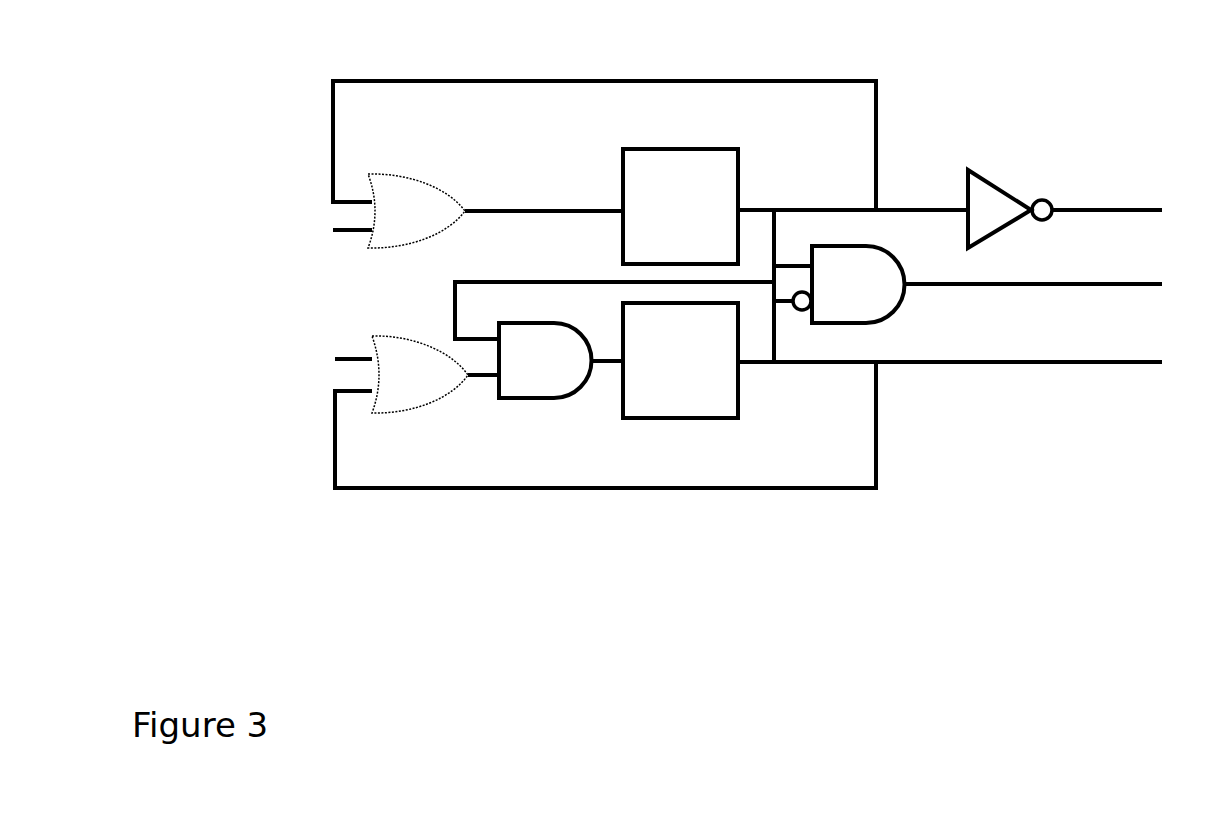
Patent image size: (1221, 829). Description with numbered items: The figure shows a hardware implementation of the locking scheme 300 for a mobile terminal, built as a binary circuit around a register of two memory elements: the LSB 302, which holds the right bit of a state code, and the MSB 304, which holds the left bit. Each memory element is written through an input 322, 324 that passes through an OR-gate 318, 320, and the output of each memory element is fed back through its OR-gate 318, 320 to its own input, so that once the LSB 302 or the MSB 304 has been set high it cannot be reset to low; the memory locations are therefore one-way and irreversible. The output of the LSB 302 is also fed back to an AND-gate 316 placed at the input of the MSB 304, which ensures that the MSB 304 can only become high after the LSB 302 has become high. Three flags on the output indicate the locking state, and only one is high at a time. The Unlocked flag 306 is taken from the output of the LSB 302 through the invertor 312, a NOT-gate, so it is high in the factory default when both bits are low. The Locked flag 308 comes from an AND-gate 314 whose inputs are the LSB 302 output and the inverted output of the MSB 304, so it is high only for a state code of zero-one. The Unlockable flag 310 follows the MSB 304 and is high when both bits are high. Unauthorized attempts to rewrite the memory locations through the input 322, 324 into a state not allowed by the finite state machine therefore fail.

The locking scheme 300 is at (744, 364).
The LSB memory element 302 is at (680, 206).
The MSB memory element 304 is at (680, 360).
The Unlocked flag 306 is at (1134, 201).
The Locked flag 308 is at (1060, 285).
The Unlockable flag 310 is at (1046, 356).
The invertor 312 is at (1010, 193).
The AND-gate 314 is at (849, 284).
The AND-gate 316 is at (545, 360).
The OR-gate 318 is at (416, 211).
The OR-gate 320 is at (420, 374).
The input 322 is at (322, 231).
The input 324 is at (326, 358).